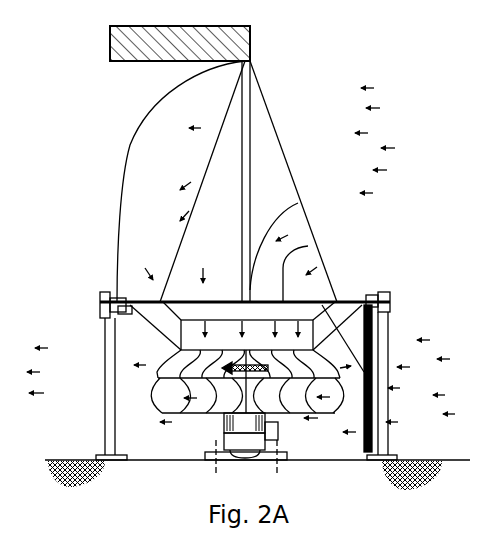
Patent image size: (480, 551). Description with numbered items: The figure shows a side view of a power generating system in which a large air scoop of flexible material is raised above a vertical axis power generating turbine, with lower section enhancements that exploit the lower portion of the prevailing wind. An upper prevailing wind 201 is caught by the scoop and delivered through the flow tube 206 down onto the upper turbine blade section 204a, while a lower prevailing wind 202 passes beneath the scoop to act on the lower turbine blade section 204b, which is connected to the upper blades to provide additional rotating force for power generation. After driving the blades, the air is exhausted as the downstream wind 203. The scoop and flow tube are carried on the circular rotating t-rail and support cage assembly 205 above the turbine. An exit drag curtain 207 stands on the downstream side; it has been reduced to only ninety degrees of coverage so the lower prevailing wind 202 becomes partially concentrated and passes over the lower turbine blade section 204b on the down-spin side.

The upper prevailing wind 201 is at (375, 140).
The lower prevailing wind 202 is at (409, 386).
The downstream wind 203 is at (39, 360).
The upper turbine blade section 204a is at (172, 357).
The lower turbine blade section 204b is at (150, 404).
The circular rotating t-rail and support cage assembly 205 is at (352, 300).
The flow tube 206 is at (306, 308).
The exit drag curtain 207 is at (360, 443).